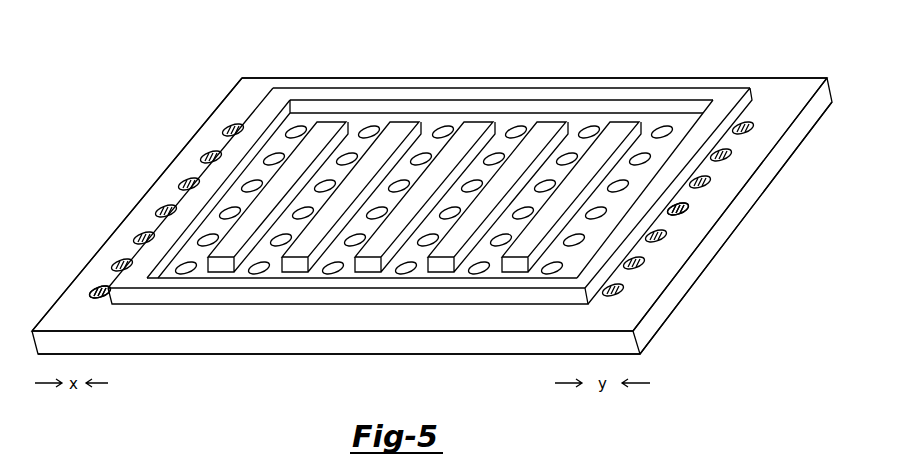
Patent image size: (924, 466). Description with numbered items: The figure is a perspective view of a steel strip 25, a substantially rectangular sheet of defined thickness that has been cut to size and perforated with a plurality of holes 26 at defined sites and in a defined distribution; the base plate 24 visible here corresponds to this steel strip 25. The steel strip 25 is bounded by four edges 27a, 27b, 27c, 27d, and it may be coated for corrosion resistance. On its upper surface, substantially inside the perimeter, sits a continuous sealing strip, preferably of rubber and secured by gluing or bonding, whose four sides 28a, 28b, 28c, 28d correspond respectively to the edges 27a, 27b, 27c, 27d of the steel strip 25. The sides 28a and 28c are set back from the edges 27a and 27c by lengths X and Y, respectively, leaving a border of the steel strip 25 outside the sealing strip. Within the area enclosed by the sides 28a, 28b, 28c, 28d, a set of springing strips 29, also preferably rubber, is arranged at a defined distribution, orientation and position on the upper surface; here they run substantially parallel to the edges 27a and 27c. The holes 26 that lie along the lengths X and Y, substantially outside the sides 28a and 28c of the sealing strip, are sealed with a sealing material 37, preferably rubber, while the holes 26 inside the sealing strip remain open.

The base plate 24 is at (650, 285).
The steel strip 25 is at (678, 115).
The holes 26 is at (372, 132).
The edge 27a is at (95, 253).
The edge 27b is at (398, 77).
The edge 27c is at (735, 215).
The edge 27d is at (262, 343).
The side of sealing strip 28a is at (212, 168).
The side of sealing strip 28b is at (525, 88).
The side of sealing strip 28c is at (700, 150).
The side of sealing strip 28d is at (430, 295).
The springing strips 29 is at (310, 163).
The sealing material 37 is at (90, 287).